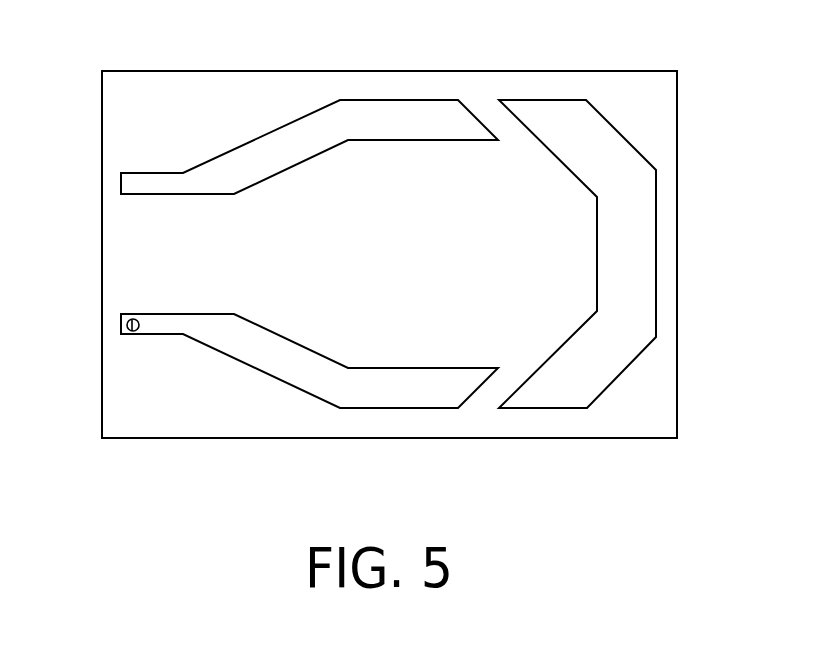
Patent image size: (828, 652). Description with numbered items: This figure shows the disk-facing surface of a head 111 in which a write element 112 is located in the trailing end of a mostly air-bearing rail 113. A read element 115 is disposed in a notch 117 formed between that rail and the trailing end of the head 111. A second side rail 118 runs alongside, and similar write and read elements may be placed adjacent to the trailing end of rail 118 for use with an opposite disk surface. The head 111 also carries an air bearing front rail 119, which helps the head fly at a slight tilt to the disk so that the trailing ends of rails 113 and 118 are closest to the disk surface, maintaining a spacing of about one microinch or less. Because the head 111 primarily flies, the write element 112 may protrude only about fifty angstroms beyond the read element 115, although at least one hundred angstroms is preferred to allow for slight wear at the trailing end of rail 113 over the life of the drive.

The head 111 is at (677, 387).
The write element 112 is at (128, 332).
The rail 113 is at (410, 408).
The read element 115 is at (113, 329).
The notch 117 is at (113, 296).
The rail 118 is at (413, 100).
The air bearing front rail 119 is at (657, 260).